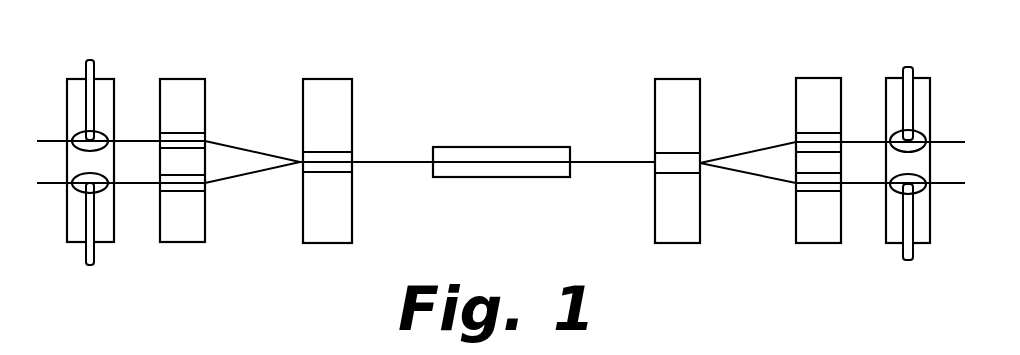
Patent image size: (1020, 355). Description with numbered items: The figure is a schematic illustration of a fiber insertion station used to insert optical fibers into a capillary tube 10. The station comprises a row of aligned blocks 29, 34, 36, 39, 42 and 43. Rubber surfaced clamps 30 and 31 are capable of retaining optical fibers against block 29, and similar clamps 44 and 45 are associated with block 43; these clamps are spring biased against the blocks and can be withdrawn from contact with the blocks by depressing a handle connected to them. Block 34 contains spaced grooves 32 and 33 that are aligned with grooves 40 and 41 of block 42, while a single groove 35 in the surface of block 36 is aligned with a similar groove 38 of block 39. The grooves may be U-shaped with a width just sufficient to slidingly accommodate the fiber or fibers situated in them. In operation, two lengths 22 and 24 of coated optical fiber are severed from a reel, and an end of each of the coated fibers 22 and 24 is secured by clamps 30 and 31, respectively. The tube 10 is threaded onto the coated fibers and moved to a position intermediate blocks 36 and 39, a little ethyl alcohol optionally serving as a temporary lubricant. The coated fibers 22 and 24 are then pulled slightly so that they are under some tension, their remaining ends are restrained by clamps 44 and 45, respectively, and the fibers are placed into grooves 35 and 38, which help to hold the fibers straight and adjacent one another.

The tube 10 is at (497, 147).
The coated optical fiber 22 is at (267, 154).
The coated optical fiber 24 is at (248, 176).
The block 29 is at (933, 88).
The rubber surfaced clamp 30 is at (923, 132).
The rubber surfaced clamp 31 is at (920, 190).
The groove 32 is at (810, 133).
The groove 33 is at (818, 191).
The block 34 is at (841, 93).
The groove 35 is at (675, 155).
The block 36 is at (655, 98).
The groove 38 is at (330, 155).
The block 39 is at (352, 93).
The groove 40 is at (185, 135).
The groove 41 is at (183, 191).
The block 42 is at (160, 93).
The block 43 is at (67, 93).
The clamp 44 is at (98, 137).
The clamp 45 is at (98, 187).